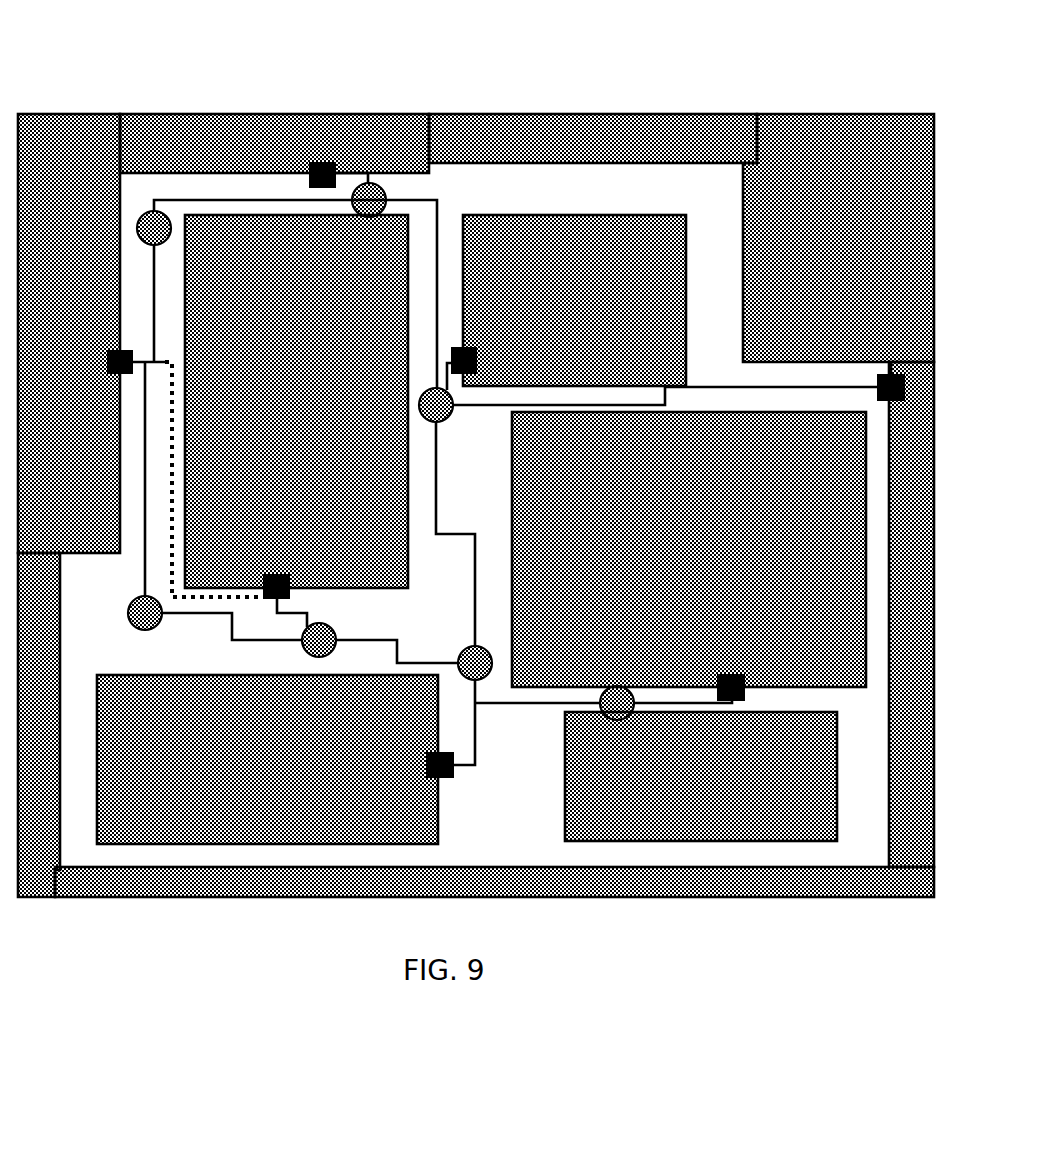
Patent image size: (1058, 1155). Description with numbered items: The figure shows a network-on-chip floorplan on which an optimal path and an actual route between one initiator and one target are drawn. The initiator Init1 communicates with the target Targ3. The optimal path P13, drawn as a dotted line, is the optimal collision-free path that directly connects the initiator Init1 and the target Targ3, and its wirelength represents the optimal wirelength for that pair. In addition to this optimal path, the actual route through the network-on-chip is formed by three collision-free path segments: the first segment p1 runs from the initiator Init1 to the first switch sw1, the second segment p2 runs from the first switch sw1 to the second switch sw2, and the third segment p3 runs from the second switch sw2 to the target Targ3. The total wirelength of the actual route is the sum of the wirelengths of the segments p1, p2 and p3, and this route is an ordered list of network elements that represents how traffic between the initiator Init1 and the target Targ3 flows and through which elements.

The initiator Init1 is at (97, 350).
The optimal path P13 is at (180, 463).
The target Targ3 is at (296, 406).
The first collision-free path segment p1 is at (130, 474).
The first switch sw1 is at (145, 644).
The second collision-free path segment p2 is at (261, 658).
The second switch sw2 is at (319, 674).
The third collision-free path segment p3 is at (291, 628).